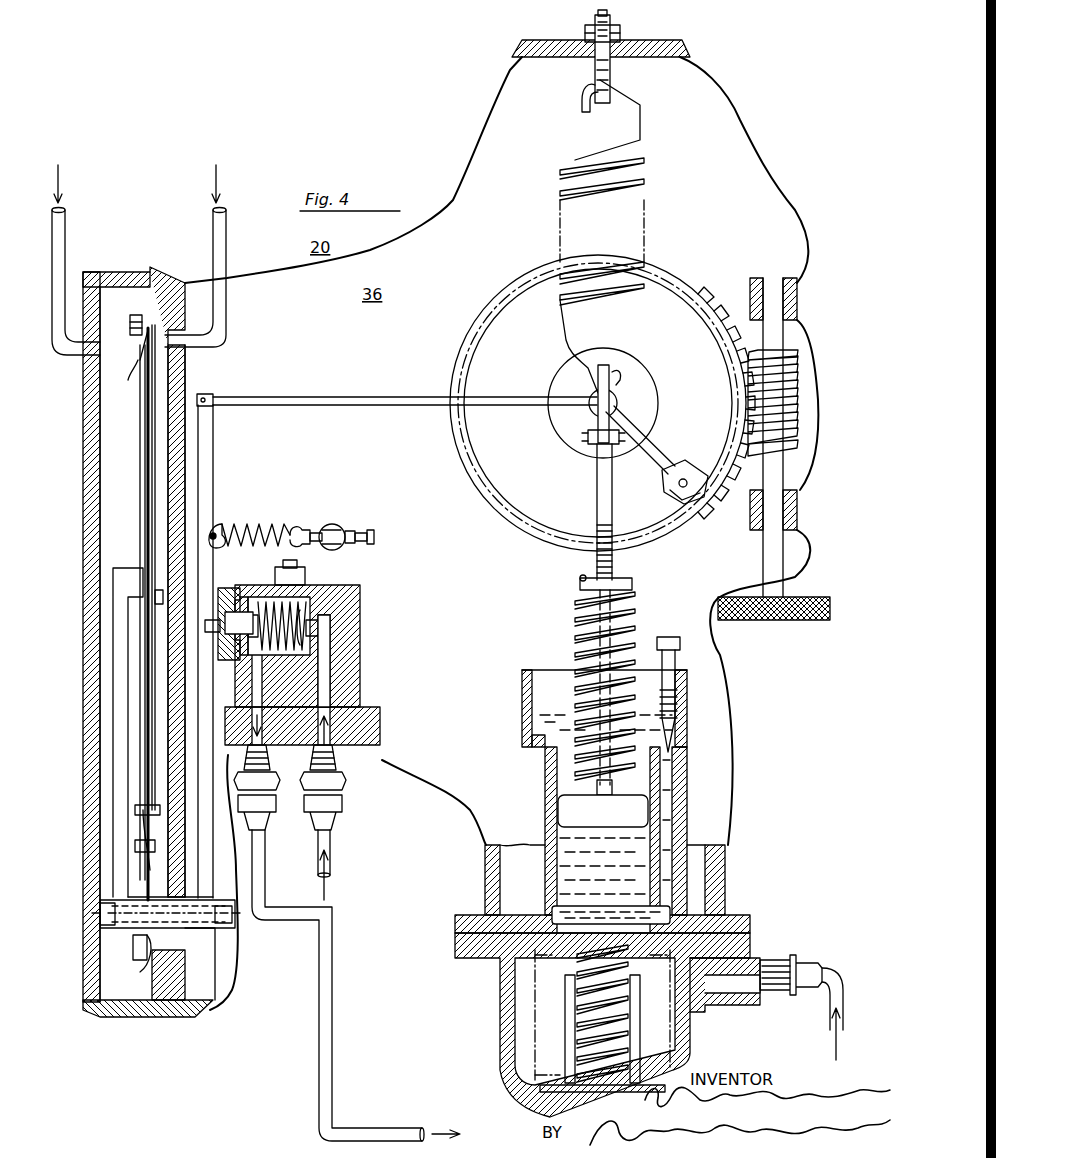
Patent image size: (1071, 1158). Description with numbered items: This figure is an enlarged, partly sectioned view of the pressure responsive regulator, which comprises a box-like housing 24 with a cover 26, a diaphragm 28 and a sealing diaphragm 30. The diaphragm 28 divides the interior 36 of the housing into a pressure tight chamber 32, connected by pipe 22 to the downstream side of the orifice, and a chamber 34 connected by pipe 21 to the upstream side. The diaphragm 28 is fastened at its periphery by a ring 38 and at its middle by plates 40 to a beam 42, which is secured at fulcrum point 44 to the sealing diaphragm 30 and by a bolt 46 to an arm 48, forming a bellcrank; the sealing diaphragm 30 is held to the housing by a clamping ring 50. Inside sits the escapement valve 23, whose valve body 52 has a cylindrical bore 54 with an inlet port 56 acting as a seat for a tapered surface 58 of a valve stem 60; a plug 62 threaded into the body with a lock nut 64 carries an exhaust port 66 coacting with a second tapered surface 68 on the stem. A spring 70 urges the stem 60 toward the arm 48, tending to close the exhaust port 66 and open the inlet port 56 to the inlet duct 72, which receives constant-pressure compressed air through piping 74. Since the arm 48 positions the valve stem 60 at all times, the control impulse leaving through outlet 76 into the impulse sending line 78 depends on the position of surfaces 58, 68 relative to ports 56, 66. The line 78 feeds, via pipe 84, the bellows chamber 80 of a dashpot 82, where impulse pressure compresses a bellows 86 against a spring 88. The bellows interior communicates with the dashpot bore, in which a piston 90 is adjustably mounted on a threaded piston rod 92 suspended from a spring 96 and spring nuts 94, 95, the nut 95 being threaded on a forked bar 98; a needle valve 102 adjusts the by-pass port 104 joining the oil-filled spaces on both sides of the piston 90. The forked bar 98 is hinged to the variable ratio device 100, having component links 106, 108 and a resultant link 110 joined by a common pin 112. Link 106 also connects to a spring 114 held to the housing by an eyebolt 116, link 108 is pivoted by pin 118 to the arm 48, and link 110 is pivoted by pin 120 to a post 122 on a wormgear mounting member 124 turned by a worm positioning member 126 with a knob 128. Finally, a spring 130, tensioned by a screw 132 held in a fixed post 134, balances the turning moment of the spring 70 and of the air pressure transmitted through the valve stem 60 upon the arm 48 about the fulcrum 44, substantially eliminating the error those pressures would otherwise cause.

The pipe 21 is at (226, 300).
The pipe 22 is at (65, 240).
The escapement valve 23 is at (383, 682).
The housing 24 is at (486, 888).
The cover 26 is at (140, 1017).
The diaphragm 28 is at (148, 812).
The sealing diaphragm 30 is at (185, 940).
The pressure tight chamber 32 is at (116, 637).
The chamber 34 is at (160, 386).
The main housing 36 is at (501, 533).
The ring 38 is at (132, 370).
The plates 40 is at (150, 375).
The beam 42 is at (125, 567).
The fulcrum point 44 is at (148, 925).
The bolt 46 is at (220, 925).
The arm 48 is at (213, 500).
The clamping ring 50 is at (148, 975).
The valve body 52 is at (362, 612).
The cylindrical bore 54 is at (305, 578).
The inlet port 56 is at (318, 612).
The tapered surface 58 is at (332, 638).
The valve stem 60 is at (239, 623).
The plug 62 is at (214, 610).
The lock nut 64 is at (244, 596).
The exhaust port 66 is at (206, 620).
The tapered surface 68 is at (252, 615).
The spring 70 is at (305, 612).
The inlet duct 72 is at (380, 728).
The piping 74 is at (332, 835).
The outlet 76 is at (280, 758).
The impulse sending line 78 is at (333, 1040).
The bellows chamber 80 is at (518, 1063).
The dashpot 82 is at (528, 928).
The pipe 84 is at (820, 988).
The bellows 86 is at (540, 1052).
The spring 88 is at (625, 1033).
The piston 90 is at (603, 803).
The threaded piston rod 92 is at (545, 737).
The spring nut 94 is at (576, 685).
The spring nut 95 is at (580, 582).
The spring 96 is at (632, 620).
The forked bar 98 is at (612, 568).
The variable ratio device 100 is at (598, 403).
The needle valve 102 is at (680, 637).
The by-pass port 104 is at (676, 742).
The component link 106 is at (597, 412).
The component link 108 is at (286, 397).
The resultant link 110 is at (655, 450).
The common pin 112 is at (612, 395).
The spring 114 is at (644, 200).
The eyebolt 116 is at (610, 72).
The pin 118 is at (205, 397).
The pin 120 is at (690, 470).
The post 122 is at (668, 490).
The mounting member 124 is at (697, 282).
The positioning member 126 is at (796, 405).
The knob 128 is at (770, 622).
The spring 130 is at (258, 525).
The screw 132 is at (374, 537).
The post 134 is at (336, 524).